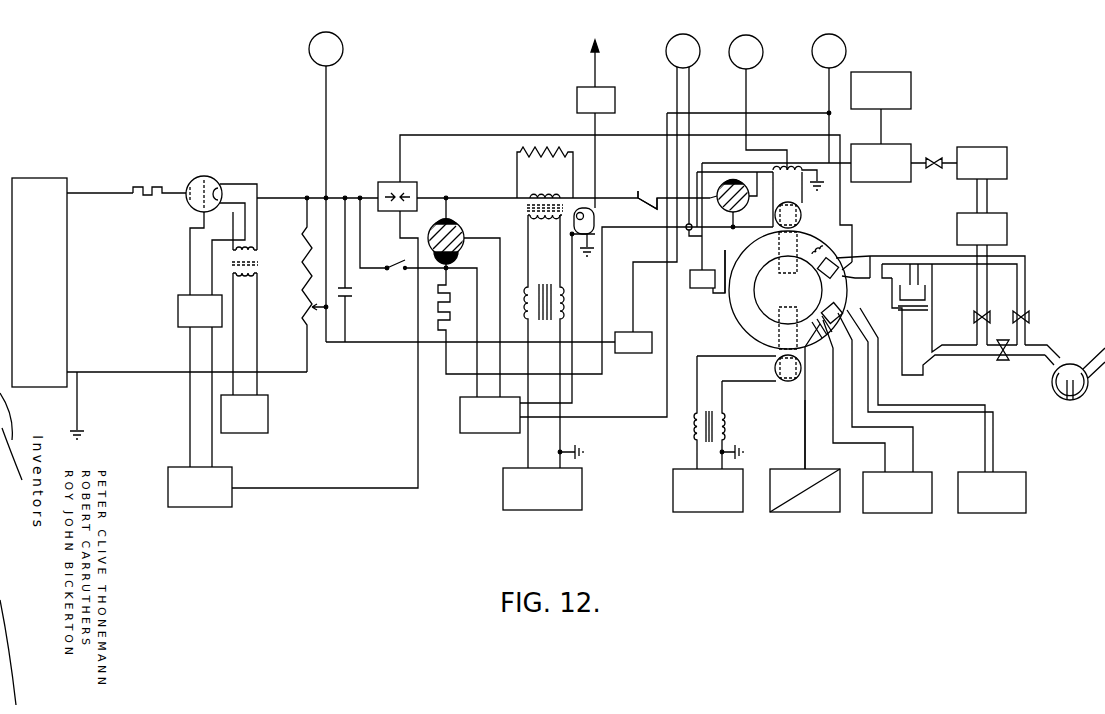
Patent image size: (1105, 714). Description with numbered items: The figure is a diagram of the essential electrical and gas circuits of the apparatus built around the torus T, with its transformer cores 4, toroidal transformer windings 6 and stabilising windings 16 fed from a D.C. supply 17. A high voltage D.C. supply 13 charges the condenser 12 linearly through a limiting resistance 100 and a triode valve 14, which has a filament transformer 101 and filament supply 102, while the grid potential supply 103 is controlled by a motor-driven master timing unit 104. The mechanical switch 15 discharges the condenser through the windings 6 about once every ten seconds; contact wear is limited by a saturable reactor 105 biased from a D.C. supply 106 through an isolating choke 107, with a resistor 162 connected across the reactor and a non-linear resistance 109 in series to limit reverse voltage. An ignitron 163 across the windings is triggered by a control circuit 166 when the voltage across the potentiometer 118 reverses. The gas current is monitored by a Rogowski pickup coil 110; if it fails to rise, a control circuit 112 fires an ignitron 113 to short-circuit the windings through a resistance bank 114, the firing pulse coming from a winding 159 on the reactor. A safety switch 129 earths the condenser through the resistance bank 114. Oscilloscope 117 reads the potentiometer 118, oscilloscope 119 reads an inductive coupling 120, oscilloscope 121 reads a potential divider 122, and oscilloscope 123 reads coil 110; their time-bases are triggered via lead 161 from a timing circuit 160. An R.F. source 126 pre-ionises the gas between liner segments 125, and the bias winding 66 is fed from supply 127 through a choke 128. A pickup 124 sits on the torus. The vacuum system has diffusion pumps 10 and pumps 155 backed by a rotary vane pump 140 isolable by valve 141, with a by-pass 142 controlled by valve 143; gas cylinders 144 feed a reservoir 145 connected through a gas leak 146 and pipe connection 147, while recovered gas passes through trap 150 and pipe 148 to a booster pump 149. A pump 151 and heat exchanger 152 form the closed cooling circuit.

The high voltage D.C. supply 13 is at (47, 291).
The limiting resistance 100 is at (148, 187).
The triode valve 14 is at (208, 182).
The filament transformer 101 is at (255, 263).
The potential supply 103 is at (184, 312).
The filament supply 102 is at (268, 415).
The master timing unit 104 is at (200, 505).
The potentiometer 118 is at (299, 301).
The oscilloscope 117 is at (342, 53).
The condenser 12 is at (353, 292).
The safety switch 129 is at (397, 266).
The mechanical switch 15 is at (407, 183).
The ignitron 113 is at (463, 234).
The resistance bank 114 is at (450, 330).
The control circuit 112 is at (483, 431).
The D.C. supply 106 is at (543, 504).
The saturable reactor 105 is at (541, 196).
The isolating choke 107 is at (563, 298).
The resistor 162 is at (543, 146).
The timing circuit 160 is at (580, 98).
The lead 161 is at (593, 72).
The winding 159 is at (583, 213).
The non-linear resistance 109 is at (643, 189).
The oscilloscope 119 is at (667, 54).
The oscilloscope 121 is at (740, 64).
The oscilloscope 123 is at (823, 60).
The ignitron 163 is at (729, 181).
The potential divider 122 is at (790, 168).
The toroidal transformer windings 6 is at (788, 203).
The inductive coupling 120 is at (678, 229).
The hot nickel tube gas leak 146 is at (692, 277).
The pipe connection 147 is at (723, 266).
The control circuit 166 is at (635, 343).
The torus T is at (748, 329).
The transformer cores 4 is at (777, 305).
The toroidal stabilising windings 16 is at (810, 320).
The Rogowski pickup coil 110 is at (825, 254).
The probe 124 is at (848, 272).
The liner segments 125 is at (838, 297).
The bias winding 66 is at (788, 382).
The choke 128 is at (693, 424).
The supply 127 is at (713, 502).
The pump 151 is at (807, 508).
The heat exchanger 152 is at (788, 478).
The D.C. supply 17 is at (898, 508).
The R.F. source 126 is at (990, 505).
The gas cylinder 144 is at (907, 95).
The reservoir 145 is at (880, 180).
The booster pump 149 is at (1003, 168).
The pipe 148 is at (987, 196).
The trap 150 is at (1007, 232).
The by-pass 142 is at (947, 256).
The diffusion pumps 10 is at (910, 372).
The pumps 155 is at (912, 282).
The valve 143 is at (1030, 318).
The valve 141 is at (1002, 363).
The rotary vane pump 140 is at (1063, 409).